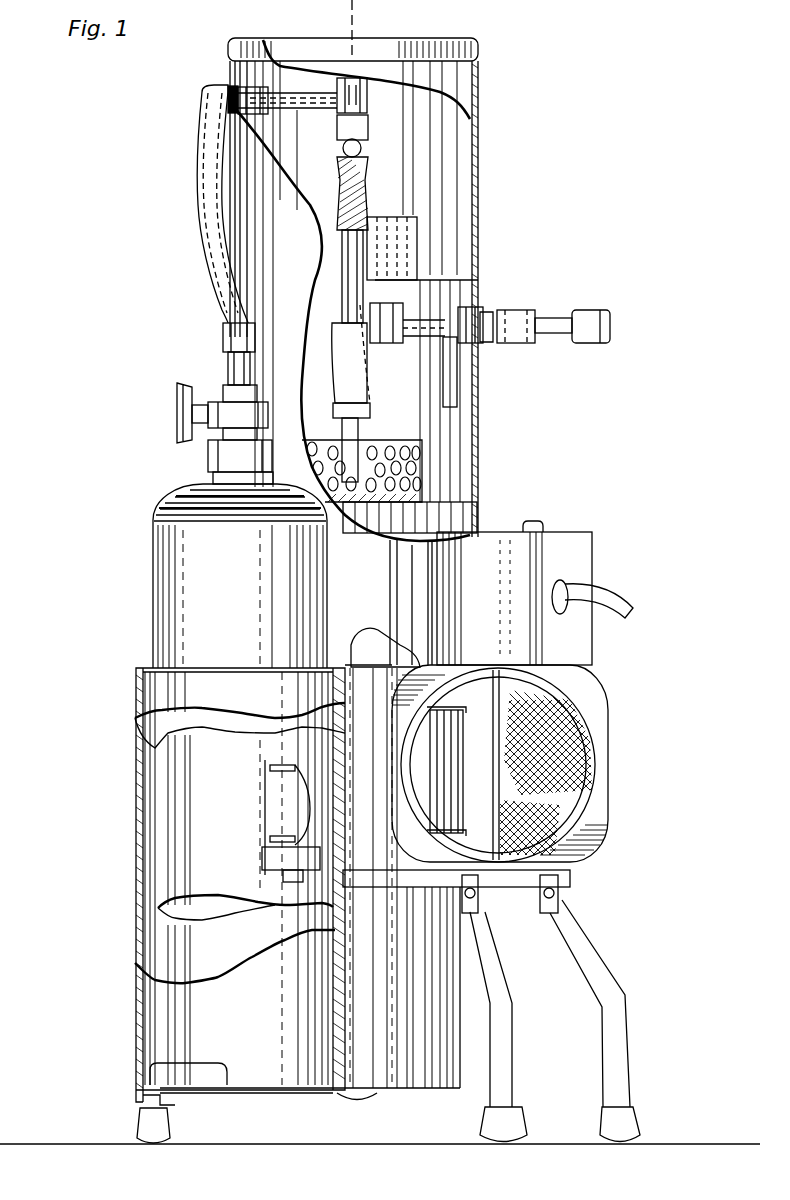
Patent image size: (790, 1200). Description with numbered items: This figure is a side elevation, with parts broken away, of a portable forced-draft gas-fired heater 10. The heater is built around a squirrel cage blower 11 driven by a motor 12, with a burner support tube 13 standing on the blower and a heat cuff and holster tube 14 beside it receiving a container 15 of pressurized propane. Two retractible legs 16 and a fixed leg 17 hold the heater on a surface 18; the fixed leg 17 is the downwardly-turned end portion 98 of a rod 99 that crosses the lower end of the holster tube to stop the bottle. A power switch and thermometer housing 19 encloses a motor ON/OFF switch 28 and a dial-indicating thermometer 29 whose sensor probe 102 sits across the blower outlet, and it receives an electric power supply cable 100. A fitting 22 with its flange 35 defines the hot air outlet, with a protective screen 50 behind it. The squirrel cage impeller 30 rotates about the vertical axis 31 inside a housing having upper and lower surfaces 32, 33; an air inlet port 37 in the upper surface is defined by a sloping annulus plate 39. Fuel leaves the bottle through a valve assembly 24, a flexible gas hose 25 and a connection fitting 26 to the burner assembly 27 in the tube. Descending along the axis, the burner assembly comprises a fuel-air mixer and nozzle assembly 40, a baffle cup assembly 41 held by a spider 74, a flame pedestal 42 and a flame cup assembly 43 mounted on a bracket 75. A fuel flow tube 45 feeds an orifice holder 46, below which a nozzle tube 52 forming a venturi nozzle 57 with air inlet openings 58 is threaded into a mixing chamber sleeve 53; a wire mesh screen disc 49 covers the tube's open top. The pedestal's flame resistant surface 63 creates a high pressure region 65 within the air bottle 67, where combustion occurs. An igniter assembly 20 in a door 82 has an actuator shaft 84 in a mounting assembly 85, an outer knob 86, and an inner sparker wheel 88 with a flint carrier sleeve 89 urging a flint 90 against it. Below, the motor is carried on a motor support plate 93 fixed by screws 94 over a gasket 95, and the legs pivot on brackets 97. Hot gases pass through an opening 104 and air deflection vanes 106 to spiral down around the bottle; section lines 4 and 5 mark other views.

The heater 10 is at (603, 78).
The blower 11 is at (277, 858).
The motor 12 is at (615, 1138).
The burner support tube 13 is at (486, 184).
The heat cuff and holster tube 14 is at (160, 690).
The container of pressurized fuel 15 is at (175, 546).
The retractible legs 16 is at (607, 993).
The fixed leg 17 is at (140, 1127).
The surface 18 is at (288, 1144).
The power switch and thermometer housing 19 is at (572, 556).
The igniter assembly 20 is at (566, 306).
The fitting 22 is at (585, 812).
The fuel shut-off, flow regulating and pressure regulating valve assembly 24 is at (174, 412).
The flexible gas hose 25 is at (208, 200).
The connection fitting 26 is at (222, 83).
The burner assembly 27 is at (385, 212).
The motor ON/OFF switch 28 is at (543, 527).
The dial-indicating thermometer 29 is at (503, 530).
The squirrel cage impeller 30 is at (463, 767).
The axis 31 is at (353, 15).
The upper surface 32 is at (332, 667).
The lower surface 33 is at (402, 878).
The flange 35 is at (580, 690).
The air inlet port 37 is at (370, 633).
The annulus plate 39 is at (378, 668).
The fuel-air mixer and nozzle assembly 40 is at (322, 170).
The baffle cup assembly 41 is at (432, 229).
The flame pedestal 42 is at (362, 430).
The flame cup assembly 43 is at (434, 479).
The fuel flow tube 45 is at (288, 87).
The orifice holder 46 is at (367, 100).
The wire mesh screen disc 49 is at (268, 62).
The protective screen 50 is at (545, 775).
The nozzle tube 52 is at (368, 160).
The mixing chamber sleeve 53 is at (342, 262).
The venturi nozzle 57 is at (352, 178).
The air inlet openings 58 is at (352, 148).
The flame resistant surface 63 is at (337, 400).
The high pressure region 65 is at (340, 327).
The air bottle 67 is at (440, 442).
The spider 74 is at (440, 263).
The bracket 75 is at (440, 515).
The door 82 is at (478, 295).
The actuator shaft 84 is at (557, 333).
The mounting assembly 85 is at (478, 312).
The knob 86 is at (590, 343).
The sparker wheel 88 is at (480, 272).
The flint carrier sleeve 89 is at (457, 380).
The flint 90 is at (440, 338).
The motor support plate 93 is at (356, 895).
The screws 94 is at (408, 890).
The gasket 95 is at (433, 903).
The brackets 97 is at (547, 903).
The downwardly-turned end portion 98 is at (150, 1103).
The rod 99 is at (203, 1090).
The electric power supply cable 100 is at (612, 598).
The sensor probe 102 is at (520, 803).
The opening 104 is at (267, 817).
The air deflection vanes 106 is at (278, 755).
The section line 4- 4 is at (300, 749).
The section line 5- 5 is at (632, 393).